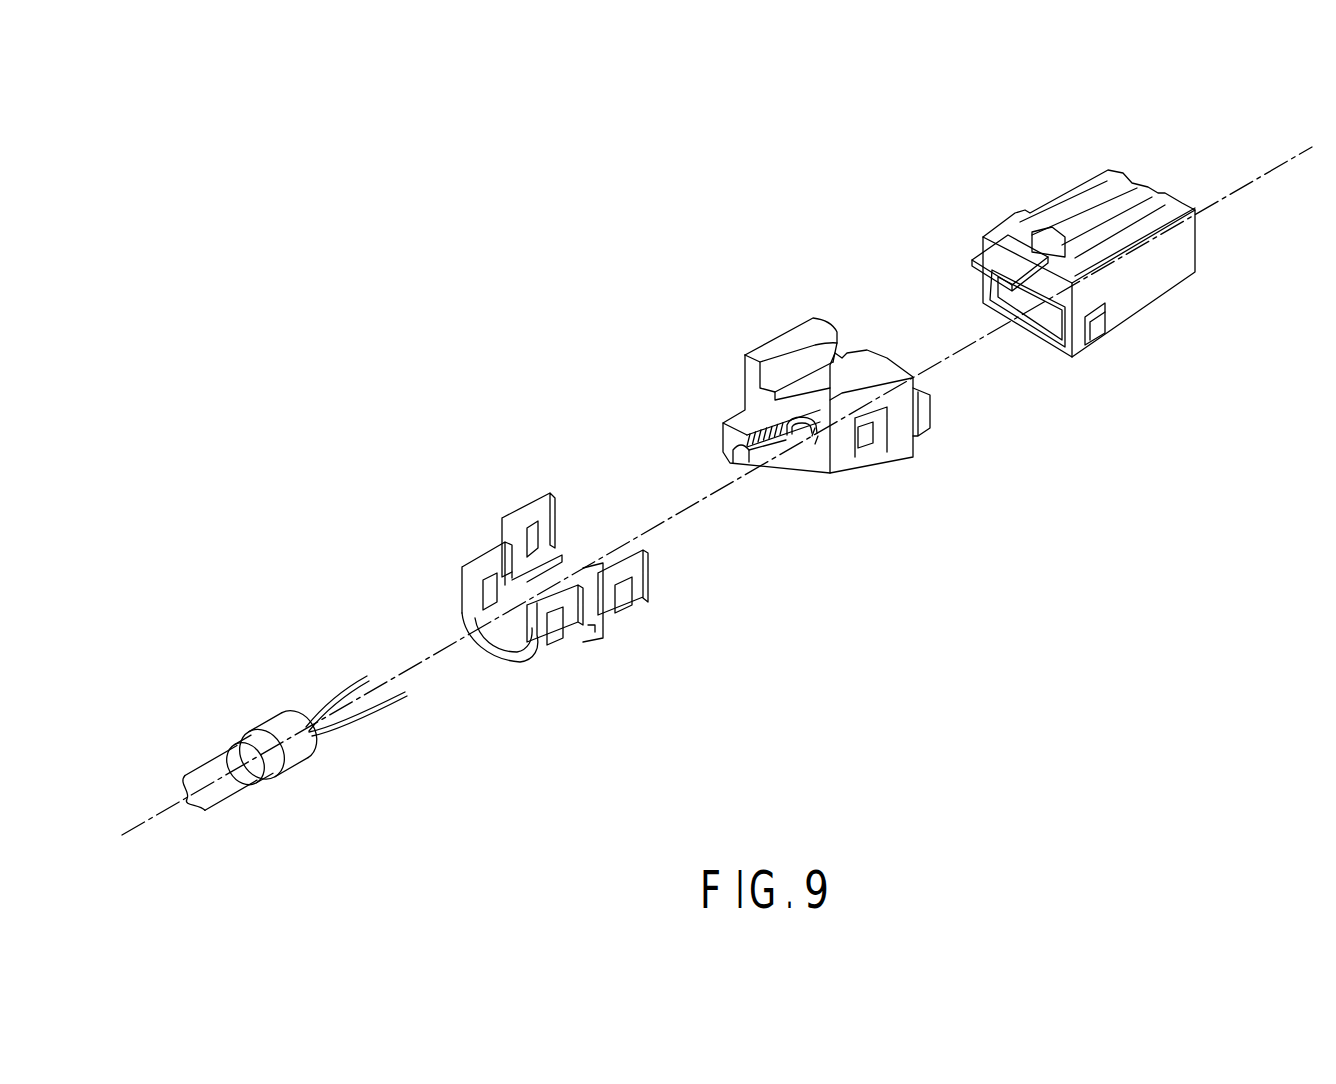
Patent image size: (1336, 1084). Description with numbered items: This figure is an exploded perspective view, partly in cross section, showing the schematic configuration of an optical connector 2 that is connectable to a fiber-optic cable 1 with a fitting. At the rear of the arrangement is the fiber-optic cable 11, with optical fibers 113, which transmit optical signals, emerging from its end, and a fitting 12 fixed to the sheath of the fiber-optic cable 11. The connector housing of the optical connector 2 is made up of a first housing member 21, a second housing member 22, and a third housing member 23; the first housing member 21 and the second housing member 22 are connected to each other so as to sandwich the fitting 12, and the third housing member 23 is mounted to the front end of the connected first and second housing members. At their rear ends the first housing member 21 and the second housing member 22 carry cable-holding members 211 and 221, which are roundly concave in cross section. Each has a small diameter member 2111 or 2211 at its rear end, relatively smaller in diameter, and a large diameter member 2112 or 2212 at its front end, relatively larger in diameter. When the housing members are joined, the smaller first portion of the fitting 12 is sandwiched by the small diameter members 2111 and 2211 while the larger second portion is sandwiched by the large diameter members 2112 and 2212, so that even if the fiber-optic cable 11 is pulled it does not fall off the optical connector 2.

The fiber-optic cable with fitting 1 is at (195, 667).
The fiber-optic cable 11 is at (247, 820).
The fitting 12 is at (308, 787).
The optical fibers 113 is at (354, 676).
The optical connector 2 is at (1058, 682).
The first housing member 21 is at (683, 695).
The cable-holding member 211 is at (503, 608).
The small diameter member 2111 is at (505, 617).
The large diameter member 2112 is at (513, 618).
The second housing member 22 is at (762, 310).
The cable-holding member 221 is at (861, 533).
The small diameter member 2211 is at (747, 460).
The large diameter member 2212 is at (780, 455).
The third housing member 23 is at (1020, 165).